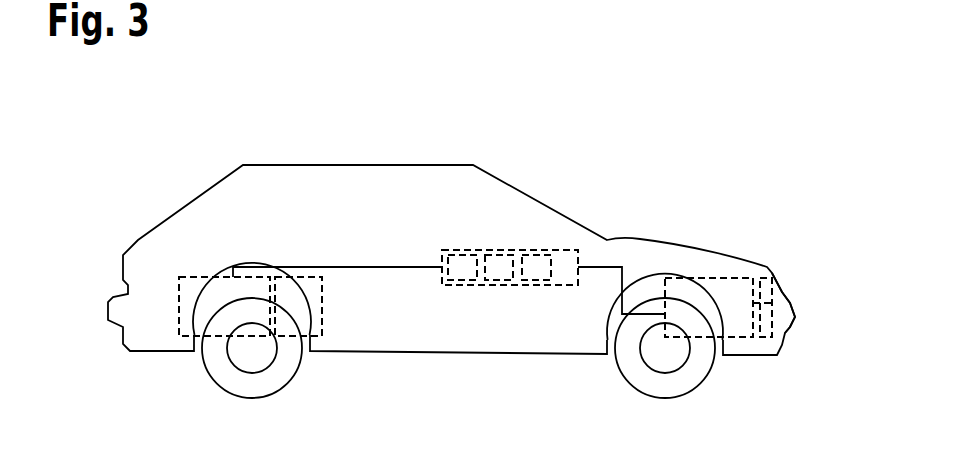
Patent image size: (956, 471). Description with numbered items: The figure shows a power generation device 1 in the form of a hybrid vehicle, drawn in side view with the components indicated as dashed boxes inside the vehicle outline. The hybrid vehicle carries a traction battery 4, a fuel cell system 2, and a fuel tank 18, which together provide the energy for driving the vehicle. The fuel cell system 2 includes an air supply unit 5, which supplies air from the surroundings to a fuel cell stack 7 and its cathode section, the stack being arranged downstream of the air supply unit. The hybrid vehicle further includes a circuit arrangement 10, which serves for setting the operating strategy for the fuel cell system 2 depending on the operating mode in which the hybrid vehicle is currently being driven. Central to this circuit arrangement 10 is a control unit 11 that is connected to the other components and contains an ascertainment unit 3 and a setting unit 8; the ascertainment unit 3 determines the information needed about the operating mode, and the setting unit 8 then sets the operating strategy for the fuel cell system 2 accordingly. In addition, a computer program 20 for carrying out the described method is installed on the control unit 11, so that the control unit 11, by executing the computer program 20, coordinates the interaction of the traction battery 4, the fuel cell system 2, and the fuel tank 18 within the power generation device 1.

The power generation device 1 is at (112, 193).
The fuel cell system 2 is at (777, 297).
The ascertainment unit 3 is at (492, 255).
The traction battery 4 is at (200, 277).
The air supply unit 5 is at (765, 340).
The fuel cell stack 7 is at (715, 278).
The setting unit 8 is at (548, 285).
The circuit arrangement 10 is at (358, 252).
The control unit 11 is at (560, 250).
The fuel tank 18 is at (313, 340).
The computer program 20 is at (455, 250).